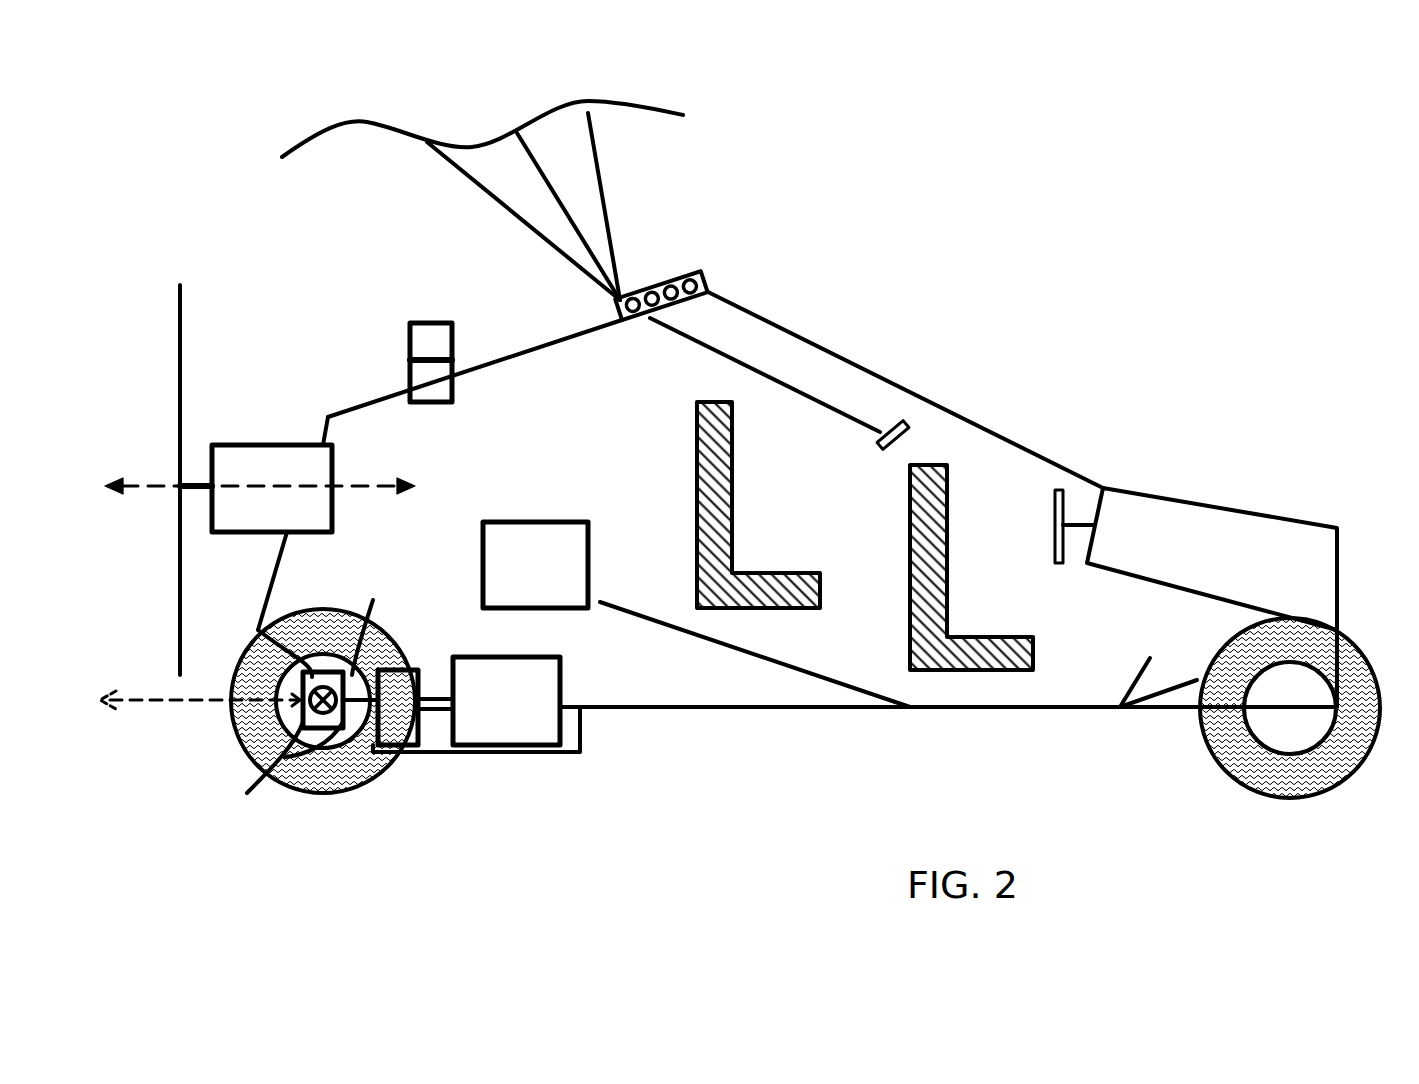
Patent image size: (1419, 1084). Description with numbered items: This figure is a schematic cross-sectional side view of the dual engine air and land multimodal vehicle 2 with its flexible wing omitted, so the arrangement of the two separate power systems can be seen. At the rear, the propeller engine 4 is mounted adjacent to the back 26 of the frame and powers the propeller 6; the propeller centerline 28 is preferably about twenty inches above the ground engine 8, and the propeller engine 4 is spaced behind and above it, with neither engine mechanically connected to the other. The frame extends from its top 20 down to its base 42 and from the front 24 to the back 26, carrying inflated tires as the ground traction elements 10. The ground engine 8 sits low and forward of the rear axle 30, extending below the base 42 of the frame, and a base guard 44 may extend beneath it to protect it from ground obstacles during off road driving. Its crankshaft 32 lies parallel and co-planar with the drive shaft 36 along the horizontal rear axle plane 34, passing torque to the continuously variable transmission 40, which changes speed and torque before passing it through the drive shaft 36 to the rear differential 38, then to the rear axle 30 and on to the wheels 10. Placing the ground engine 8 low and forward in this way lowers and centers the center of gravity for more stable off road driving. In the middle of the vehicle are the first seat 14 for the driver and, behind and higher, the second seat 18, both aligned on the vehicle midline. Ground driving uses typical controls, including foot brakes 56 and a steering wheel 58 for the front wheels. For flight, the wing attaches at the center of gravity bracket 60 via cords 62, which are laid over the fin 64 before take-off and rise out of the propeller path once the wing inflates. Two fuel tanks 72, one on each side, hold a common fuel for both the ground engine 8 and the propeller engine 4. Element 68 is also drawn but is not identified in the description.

The multimodal vehicle 2 is at (997, 254).
The propeller engine 4 is at (242, 445).
The propeller 6 is at (180, 588).
The ground engine 8 is at (560, 682).
The ground traction elements 10 is at (353, 788).
The first seat 14 is at (907, 492).
The second seat 18 is at (733, 500).
The top of the frame 20 is at (728, 300).
The front of the frame 24 is at (1338, 590).
The back of the frame 26 is at (280, 555).
The propeller centerline 28 is at (162, 483).
The rear axle 30 is at (258, 632).
The crankshaft 32 is at (427, 707).
The horizontal rear axle plane 34 is at (145, 711).
The drive shaft 36 is at (319, 676).
The rear differential 38 is at (253, 760).
The continuously variable transmission 40 is at (418, 668).
The base of the frame 42 is at (752, 707).
The base guard 44 is at (583, 747).
The foot brakes 56 is at (1135, 677).
The steering wheel 58 is at (1068, 508).
The center of gravity bracket 60 is at (697, 272).
The cords 62 is at (603, 175).
The fin 64 is at (452, 340).
The end stop 68 is at (910, 433).
The fuel tanks 72 is at (547, 518).